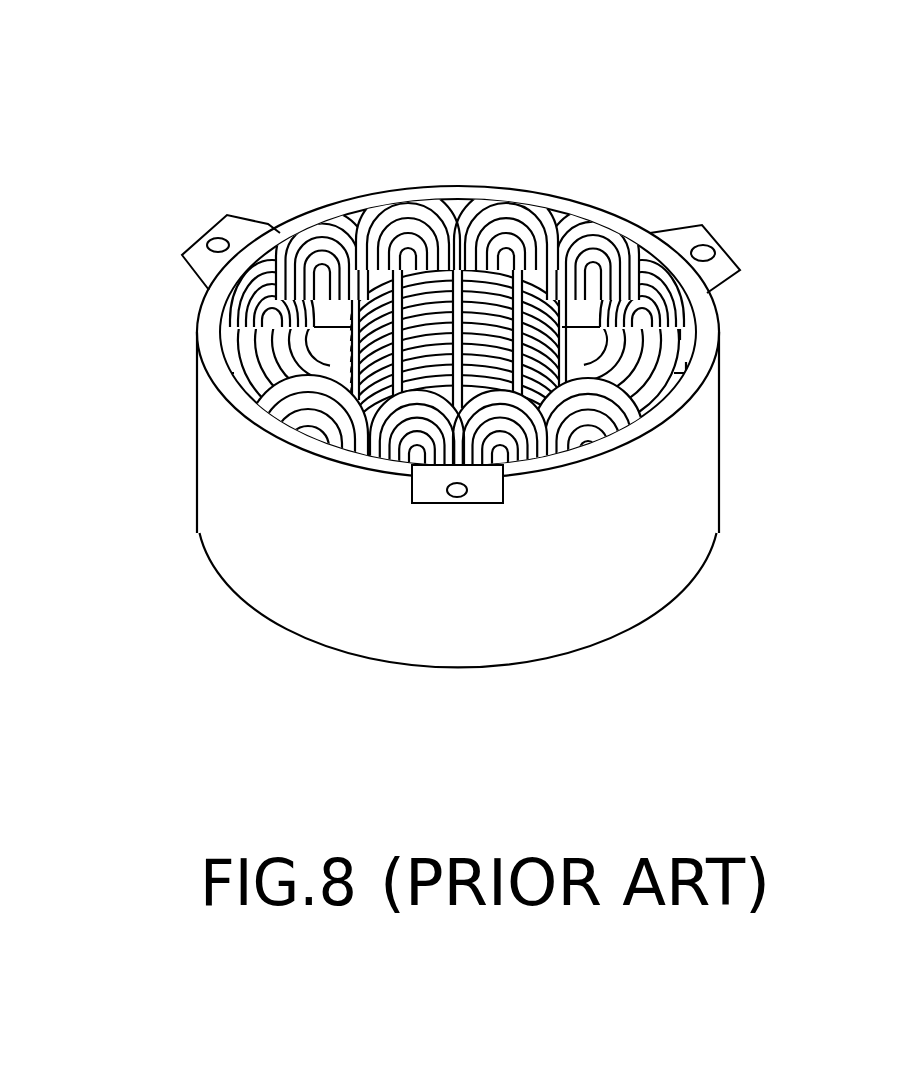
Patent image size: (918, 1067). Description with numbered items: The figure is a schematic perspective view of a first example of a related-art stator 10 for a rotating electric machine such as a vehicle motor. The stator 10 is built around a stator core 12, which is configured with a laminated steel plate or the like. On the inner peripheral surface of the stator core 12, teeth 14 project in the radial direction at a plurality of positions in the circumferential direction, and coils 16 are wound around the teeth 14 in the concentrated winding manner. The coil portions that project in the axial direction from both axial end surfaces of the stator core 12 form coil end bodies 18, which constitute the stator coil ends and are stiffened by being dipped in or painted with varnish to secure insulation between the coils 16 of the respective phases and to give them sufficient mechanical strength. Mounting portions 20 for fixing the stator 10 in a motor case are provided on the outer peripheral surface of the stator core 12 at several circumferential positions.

The stator 10 is at (738, 104).
The stator core 12 is at (680, 477).
The teeth 14 is at (305, 417).
The coils 16 is at (407, 197).
The coil end bodies 18 is at (677, 287).
The mounting portions 20 is at (197, 253).